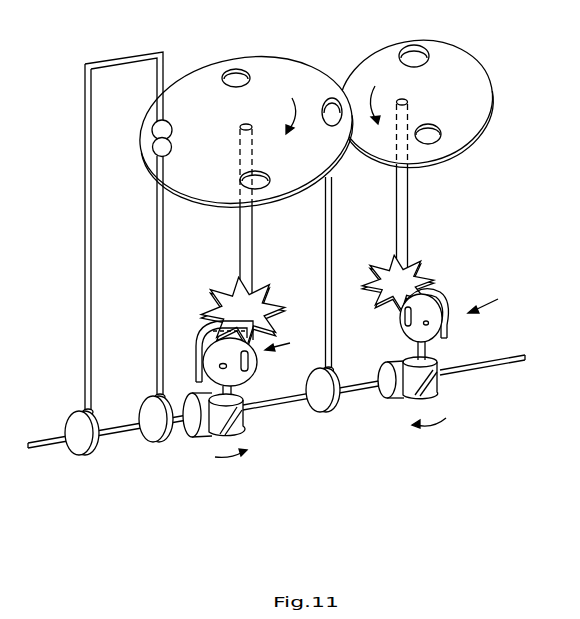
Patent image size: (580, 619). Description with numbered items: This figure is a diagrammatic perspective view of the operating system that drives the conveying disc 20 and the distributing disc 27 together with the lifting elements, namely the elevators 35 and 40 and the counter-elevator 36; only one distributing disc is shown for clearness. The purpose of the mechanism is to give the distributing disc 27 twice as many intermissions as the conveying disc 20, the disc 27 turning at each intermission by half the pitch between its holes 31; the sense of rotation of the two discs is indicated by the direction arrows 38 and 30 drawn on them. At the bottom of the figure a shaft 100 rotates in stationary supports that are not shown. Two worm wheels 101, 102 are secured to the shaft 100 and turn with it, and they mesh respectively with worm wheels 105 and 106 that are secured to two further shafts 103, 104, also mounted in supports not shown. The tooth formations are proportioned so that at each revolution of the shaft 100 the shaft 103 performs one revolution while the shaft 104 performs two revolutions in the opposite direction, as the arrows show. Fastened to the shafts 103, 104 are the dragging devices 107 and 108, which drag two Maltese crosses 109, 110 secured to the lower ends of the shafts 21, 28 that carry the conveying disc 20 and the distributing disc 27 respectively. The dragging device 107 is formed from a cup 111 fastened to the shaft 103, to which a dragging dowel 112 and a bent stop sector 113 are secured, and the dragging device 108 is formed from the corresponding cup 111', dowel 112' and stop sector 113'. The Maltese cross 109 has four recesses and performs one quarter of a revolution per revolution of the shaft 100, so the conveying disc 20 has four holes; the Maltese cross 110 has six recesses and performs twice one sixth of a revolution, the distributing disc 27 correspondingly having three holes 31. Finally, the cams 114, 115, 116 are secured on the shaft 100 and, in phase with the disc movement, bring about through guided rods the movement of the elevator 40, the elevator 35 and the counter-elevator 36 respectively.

The conveying disc 20 is at (270, 72).
The shaft 21 is at (246, 242).
The distributing disc 27 is at (464, 76).
The shaft 28 is at (403, 230).
The rotation direction arrow 30 is at (372, 114).
The holes 31 is at (434, 136).
The elevator 35 is at (160, 248).
The counter-elevator 36 is at (143, 58).
The rotation direction arrow 38 is at (292, 127).
The elevator 40 is at (326, 246).
The shaft 100 is at (54, 441).
The worm wheel 101 is at (193, 436).
The worm wheel 102 is at (391, 396).
The shaft 103 is at (245, 406).
The shaft 104 is at (427, 364).
The worm wheel 105 is at (238, 433).
The worm wheel 106 is at (434, 387).
The dragging device 107 is at (292, 344).
The dragging device 108 is at (499, 302).
The Maltese cross 109 is at (268, 303).
The Maltese cross 110 is at (419, 262).
The cup 111 is at (246, 366).
The cup 111' is at (394, 326).
The dragging dowel 112 is at (270, 362).
The dragging dowel 112' is at (379, 320).
The bent stop sector 113 is at (210, 351).
The bent stop sector 113' is at (449, 304).
The cam 114 is at (325, 408).
The cam 115 is at (160, 444).
The cam 116 is at (87, 452).